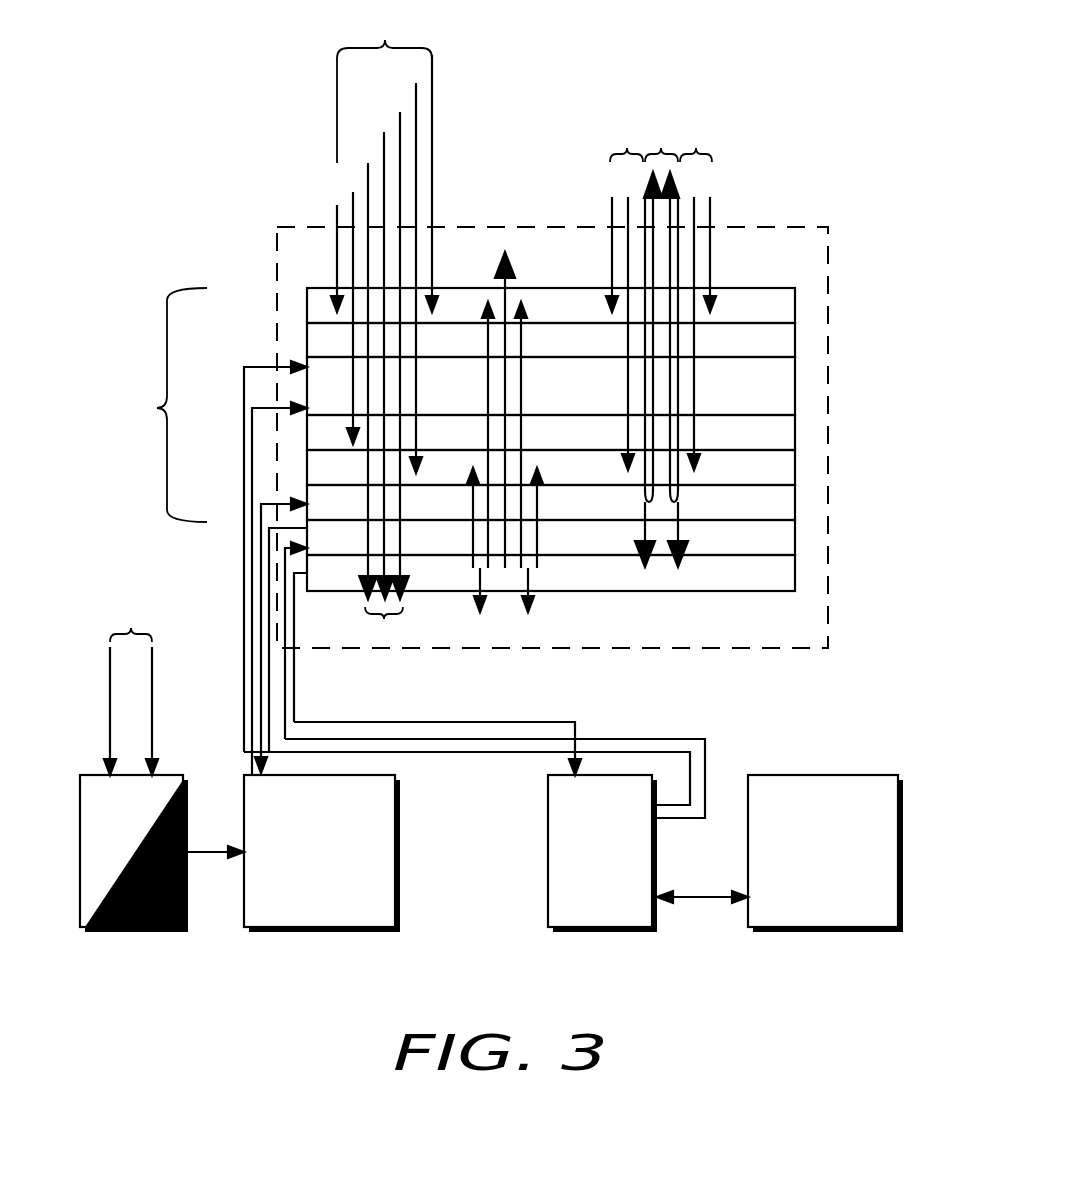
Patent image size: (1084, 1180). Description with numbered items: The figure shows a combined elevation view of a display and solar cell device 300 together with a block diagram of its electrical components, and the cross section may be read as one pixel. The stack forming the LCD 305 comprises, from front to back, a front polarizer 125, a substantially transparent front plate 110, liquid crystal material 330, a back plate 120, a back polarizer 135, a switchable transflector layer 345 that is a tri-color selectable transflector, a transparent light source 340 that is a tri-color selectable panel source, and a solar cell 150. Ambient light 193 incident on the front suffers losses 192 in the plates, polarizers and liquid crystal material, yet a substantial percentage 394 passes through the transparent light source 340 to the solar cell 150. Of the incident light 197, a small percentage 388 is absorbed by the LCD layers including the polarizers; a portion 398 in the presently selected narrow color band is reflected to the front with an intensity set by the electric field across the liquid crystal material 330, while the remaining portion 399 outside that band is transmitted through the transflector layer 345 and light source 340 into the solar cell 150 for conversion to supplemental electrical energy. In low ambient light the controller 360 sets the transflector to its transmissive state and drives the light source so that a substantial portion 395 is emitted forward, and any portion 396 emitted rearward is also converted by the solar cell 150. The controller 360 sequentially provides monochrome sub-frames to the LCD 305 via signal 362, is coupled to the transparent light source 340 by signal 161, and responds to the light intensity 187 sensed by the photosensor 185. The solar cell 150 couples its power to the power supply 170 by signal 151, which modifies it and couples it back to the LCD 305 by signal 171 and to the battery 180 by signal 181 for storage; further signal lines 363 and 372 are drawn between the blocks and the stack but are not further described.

The display and solar cell device 300 is at (770, 226).
The front polarizer 125 is at (795, 305).
The front plate 110 is at (795, 340).
The liquid crystal material 330 is at (795, 386).
The back plate 120 is at (795, 432).
The back polarizer 135 is at (795, 467).
The switchable transflector layer 345 is at (795, 502).
The transparent light source 340 is at (795, 537).
The solar cell 150 is at (795, 572).
The losses 192 is at (432, 70).
The incident ambient light 193 is at (385, 40).
The substantial percentage of ambient light 394 is at (384, 612).
The emitted portion of light 395 is at (498, 258).
The portion of generated light 396 is at (480, 606).
The absorbed percentage of light 388 is at (628, 206).
The incident light 197 is at (627, 148).
The reflected portion of light 398 is at (661, 148).
The transmitted portion of light 399 is at (641, 563).
The LCD 305 is at (157, 408).
The signal 171 is at (244, 586).
The signal 362 is at (252, 728).
The control line 363 is at (261, 623).
The signal 161 is at (269, 658).
The power line 372 is at (285, 693).
The signal 151 is at (462, 722).
The light intensity 187 is at (131, 628).
The photosensor 185 is at (162, 933).
The controller 360 is at (380, 933).
The power supply 170 is at (638, 933).
The battery 180 is at (888, 933).
The signal 181 is at (703, 893).